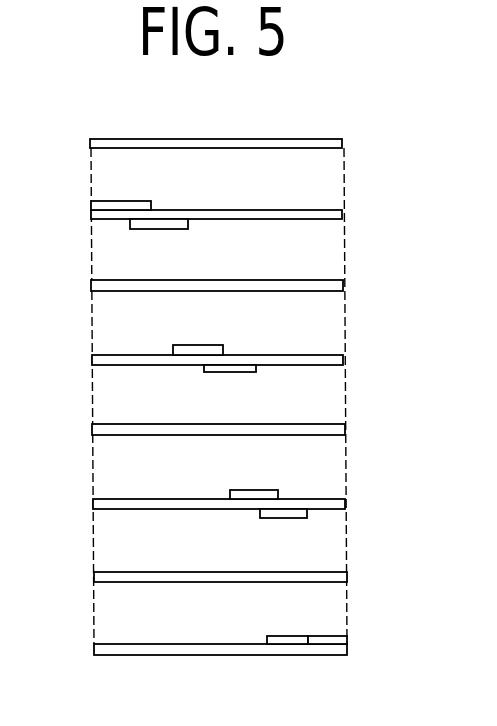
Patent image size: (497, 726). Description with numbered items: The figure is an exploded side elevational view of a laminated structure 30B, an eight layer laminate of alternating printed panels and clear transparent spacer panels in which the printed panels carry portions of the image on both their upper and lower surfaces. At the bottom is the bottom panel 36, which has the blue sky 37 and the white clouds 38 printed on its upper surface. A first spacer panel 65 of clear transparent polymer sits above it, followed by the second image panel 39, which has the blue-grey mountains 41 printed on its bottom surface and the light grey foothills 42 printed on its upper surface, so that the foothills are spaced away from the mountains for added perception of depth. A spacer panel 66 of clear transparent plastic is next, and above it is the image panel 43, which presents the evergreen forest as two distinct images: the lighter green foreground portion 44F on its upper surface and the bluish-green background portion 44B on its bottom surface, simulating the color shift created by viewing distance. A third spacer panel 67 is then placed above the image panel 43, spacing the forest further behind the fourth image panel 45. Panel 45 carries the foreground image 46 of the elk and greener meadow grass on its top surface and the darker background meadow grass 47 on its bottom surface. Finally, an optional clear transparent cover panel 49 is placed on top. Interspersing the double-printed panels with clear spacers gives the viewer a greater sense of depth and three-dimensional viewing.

The laminated structure 30B is at (288, 121).
The clear transparent polymeric cover panel 49 is at (110, 149).
The fourth image panel 45 is at (110, 220).
The foreground image 46 is at (125, 201).
The background image 47 is at (170, 230).
The third spacer panel 67 is at (110, 292).
The image panel 43 is at (112, 367).
The foreground forest image 44F is at (197, 345).
The background forest image 44B is at (233, 373).
The spacer panel 66 is at (112, 437).
The second image panel 39 is at (118, 511).
The light grey foothills image 42 is at (245, 490).
The blue-grey mountains image 41 is at (288, 519).
The first spacer panel 65 is at (130, 584).
The bottom panel 36 is at (140, 657).
The white clouds image 38 is at (282, 636).
The blue sky image 37 is at (328, 636).